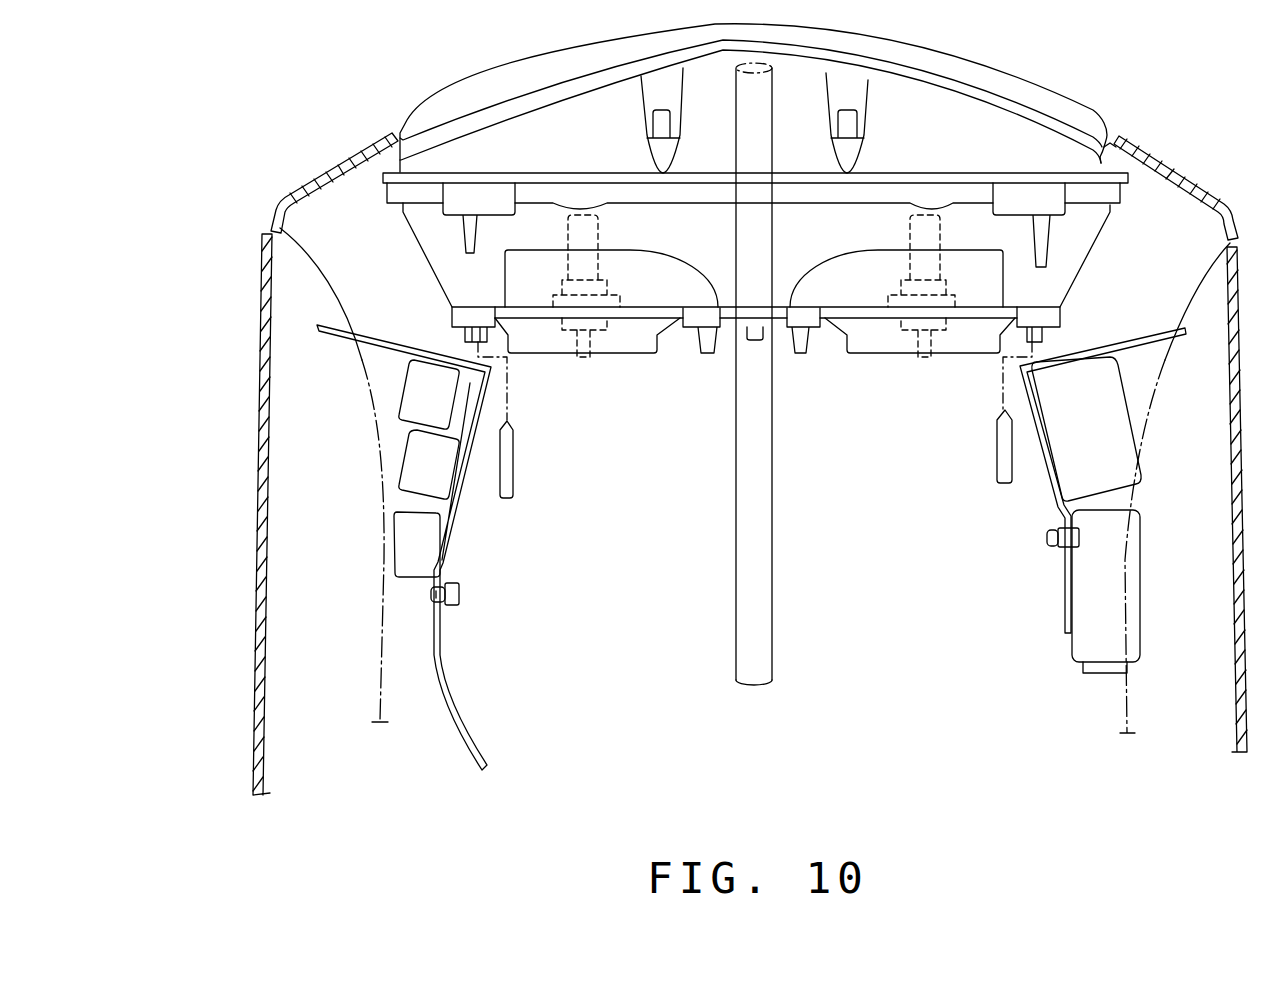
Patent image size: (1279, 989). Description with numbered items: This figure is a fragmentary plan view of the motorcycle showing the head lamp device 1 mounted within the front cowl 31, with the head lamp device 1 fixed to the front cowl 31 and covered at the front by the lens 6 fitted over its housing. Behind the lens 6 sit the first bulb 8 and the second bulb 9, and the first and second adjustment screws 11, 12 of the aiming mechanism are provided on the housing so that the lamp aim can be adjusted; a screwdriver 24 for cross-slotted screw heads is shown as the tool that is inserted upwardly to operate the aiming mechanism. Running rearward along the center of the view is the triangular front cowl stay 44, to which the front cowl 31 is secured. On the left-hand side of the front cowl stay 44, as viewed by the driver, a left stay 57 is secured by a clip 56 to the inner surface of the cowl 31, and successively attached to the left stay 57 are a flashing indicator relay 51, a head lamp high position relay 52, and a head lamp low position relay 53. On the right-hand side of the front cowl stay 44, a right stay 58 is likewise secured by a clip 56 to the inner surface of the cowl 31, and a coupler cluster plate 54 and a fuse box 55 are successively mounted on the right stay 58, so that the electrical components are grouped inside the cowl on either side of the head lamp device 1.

The head lamp device 1 is at (395, 222).
The lens 6 is at (957, 57).
The first bulb 8 is at (597, 205).
The second bulb 9 is at (913, 215).
The first adjustment screw 11 is at (448, 312).
The second adjustment screw 12 is at (1062, 318).
The screwdriver 24 is at (517, 483).
The front cowl 31 is at (260, 317).
The front cowl stay 44 is at (773, 640).
The flashing indicator relay 51 is at (400, 397).
The head lamp high position relay 52 is at (400, 473).
The head lamp low position relay 53 is at (393, 552).
The coupler cluster plate 54 is at (1130, 408).
The fuse box 55 is at (1140, 597).
The clip 56 is at (460, 597).
The left stay 57 is at (463, 497).
The right stay 58 is at (1066, 437).